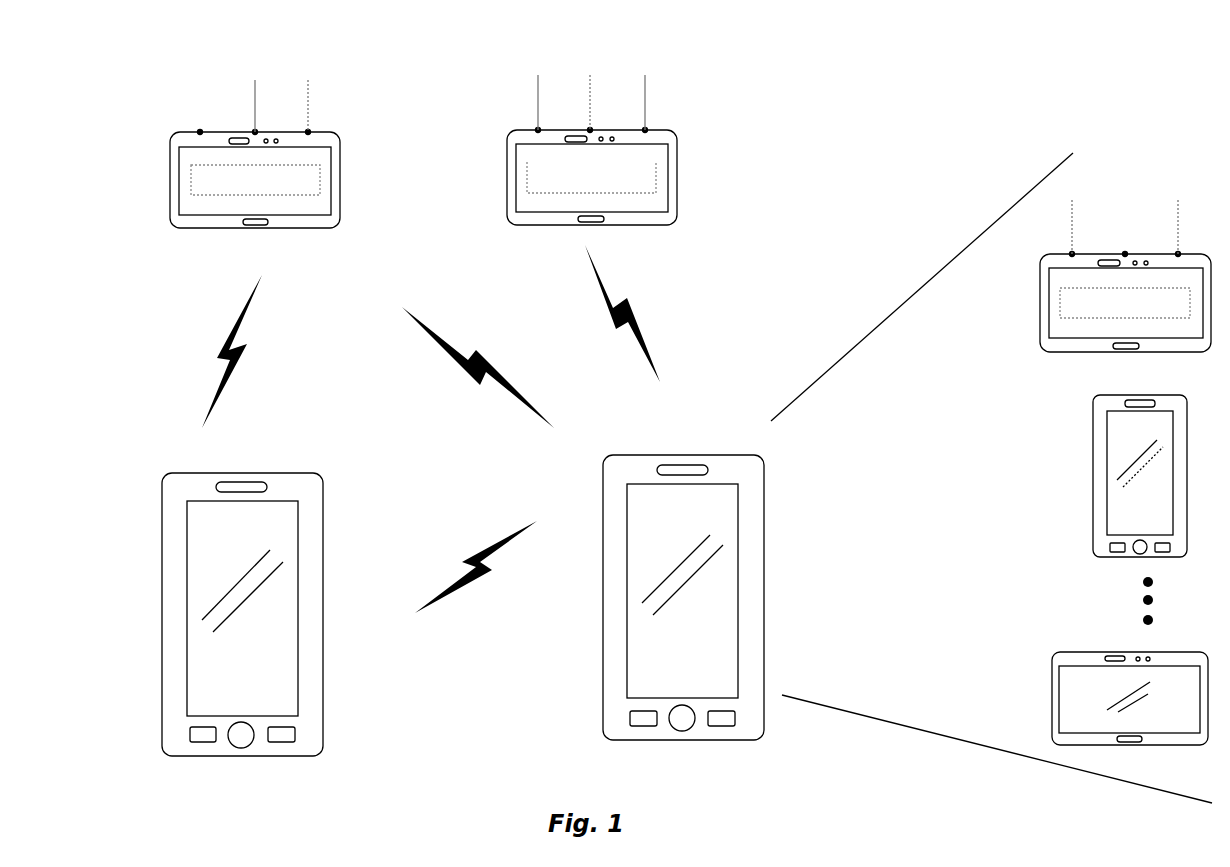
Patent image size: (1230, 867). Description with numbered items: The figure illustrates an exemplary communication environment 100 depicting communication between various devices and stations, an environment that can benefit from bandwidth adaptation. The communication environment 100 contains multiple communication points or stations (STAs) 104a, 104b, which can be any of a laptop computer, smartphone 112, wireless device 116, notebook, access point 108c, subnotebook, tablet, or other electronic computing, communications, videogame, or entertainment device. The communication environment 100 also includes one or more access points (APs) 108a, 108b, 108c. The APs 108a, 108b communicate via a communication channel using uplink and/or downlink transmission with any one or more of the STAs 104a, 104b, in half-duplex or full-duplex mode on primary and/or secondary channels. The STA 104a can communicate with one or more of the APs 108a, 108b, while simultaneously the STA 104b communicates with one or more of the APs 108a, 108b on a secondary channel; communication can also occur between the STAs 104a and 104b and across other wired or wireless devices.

The communication environment 100 is at (1090, 105).
The communication point/station (STA) 104a is at (162, 567).
The communication point/station (STA) 104b is at (603, 718).
The access point (AP) 108a is at (170, 200).
The access point (AP) 108b is at (507, 200).
The access point (AP) 108c is at (1040, 312).
The smartphone 112 is at (1093, 493).
The wireless device 116 is at (1052, 690).